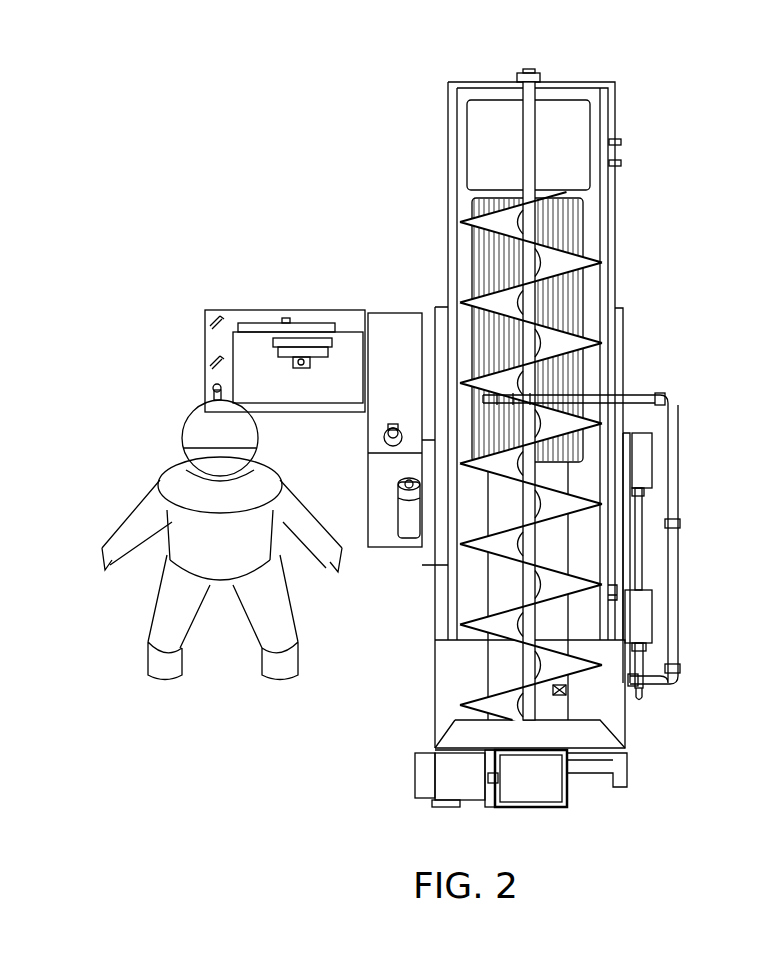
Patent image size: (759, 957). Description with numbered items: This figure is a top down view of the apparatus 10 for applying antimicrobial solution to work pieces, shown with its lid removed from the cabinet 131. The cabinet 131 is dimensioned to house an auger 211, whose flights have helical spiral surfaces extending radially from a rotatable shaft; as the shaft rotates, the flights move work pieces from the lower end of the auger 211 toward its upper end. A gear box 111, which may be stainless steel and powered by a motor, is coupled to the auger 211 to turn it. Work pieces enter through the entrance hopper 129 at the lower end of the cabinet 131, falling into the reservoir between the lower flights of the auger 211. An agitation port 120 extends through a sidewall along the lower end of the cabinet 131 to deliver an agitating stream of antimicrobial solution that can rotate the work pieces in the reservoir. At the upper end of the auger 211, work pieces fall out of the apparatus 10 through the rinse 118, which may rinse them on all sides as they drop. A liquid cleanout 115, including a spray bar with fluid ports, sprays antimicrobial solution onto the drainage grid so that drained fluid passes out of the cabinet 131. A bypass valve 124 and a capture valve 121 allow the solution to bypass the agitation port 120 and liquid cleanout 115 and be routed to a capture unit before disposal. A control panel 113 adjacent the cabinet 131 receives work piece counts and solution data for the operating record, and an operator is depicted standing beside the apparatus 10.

The apparatus 10 is at (131, 70).
The gear box 111 is at (553, 793).
The control panel 113 is at (258, 323).
The liquid cleanout 115 is at (642, 393).
The rinse 118 is at (575, 120).
The agitation port 120 is at (565, 690).
The capture valve 121 is at (652, 455).
The bypass valve 124 is at (652, 613).
The entrance hopper 129 is at (590, 738).
The cabinet 131 is at (612, 116).
The auger 211 is at (600, 262).